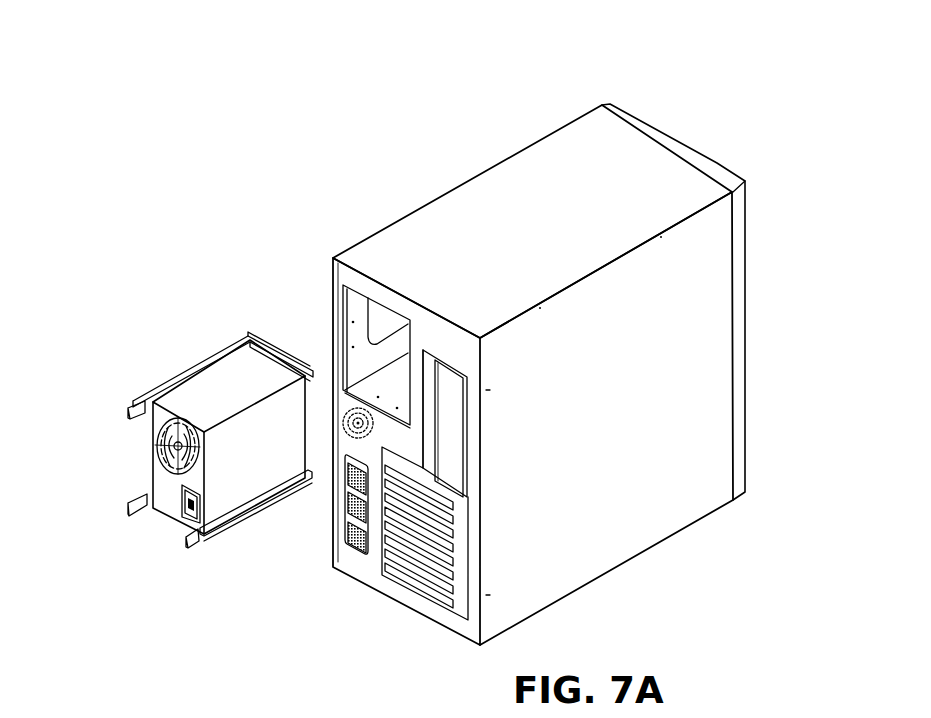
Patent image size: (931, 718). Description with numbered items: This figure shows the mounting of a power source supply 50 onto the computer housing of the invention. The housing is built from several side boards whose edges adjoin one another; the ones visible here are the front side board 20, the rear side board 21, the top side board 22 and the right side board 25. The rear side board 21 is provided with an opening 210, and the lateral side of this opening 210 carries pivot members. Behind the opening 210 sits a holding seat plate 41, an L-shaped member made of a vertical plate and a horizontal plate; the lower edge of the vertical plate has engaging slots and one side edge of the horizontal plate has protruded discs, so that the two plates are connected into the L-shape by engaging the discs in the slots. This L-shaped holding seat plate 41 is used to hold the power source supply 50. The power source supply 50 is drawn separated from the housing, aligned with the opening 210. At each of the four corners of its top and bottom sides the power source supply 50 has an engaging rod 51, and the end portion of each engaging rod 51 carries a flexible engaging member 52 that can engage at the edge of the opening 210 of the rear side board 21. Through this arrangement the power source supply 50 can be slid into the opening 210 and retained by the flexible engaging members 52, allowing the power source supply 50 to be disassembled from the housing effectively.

The front side board 20 is at (718, 172).
The rear side board 21 is at (393, 578).
The top side board 22 is at (505, 178).
The right side board 25 is at (677, 500).
The opening 210 is at (357, 317).
The holding seat plate 41 is at (353, 372).
The power source supply 50 is at (177, 363).
The engaging rod 51 is at (243, 514).
The flexible engaging member 52 is at (120, 508).